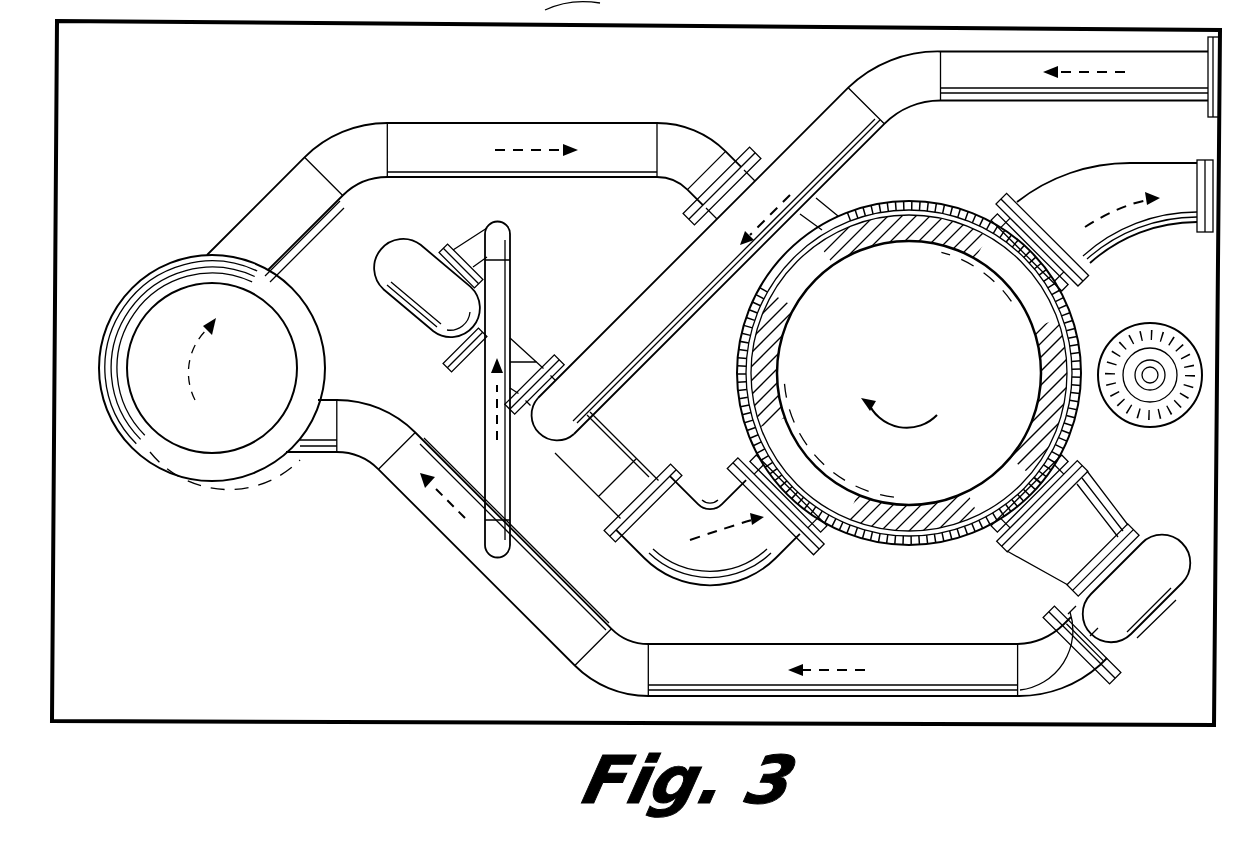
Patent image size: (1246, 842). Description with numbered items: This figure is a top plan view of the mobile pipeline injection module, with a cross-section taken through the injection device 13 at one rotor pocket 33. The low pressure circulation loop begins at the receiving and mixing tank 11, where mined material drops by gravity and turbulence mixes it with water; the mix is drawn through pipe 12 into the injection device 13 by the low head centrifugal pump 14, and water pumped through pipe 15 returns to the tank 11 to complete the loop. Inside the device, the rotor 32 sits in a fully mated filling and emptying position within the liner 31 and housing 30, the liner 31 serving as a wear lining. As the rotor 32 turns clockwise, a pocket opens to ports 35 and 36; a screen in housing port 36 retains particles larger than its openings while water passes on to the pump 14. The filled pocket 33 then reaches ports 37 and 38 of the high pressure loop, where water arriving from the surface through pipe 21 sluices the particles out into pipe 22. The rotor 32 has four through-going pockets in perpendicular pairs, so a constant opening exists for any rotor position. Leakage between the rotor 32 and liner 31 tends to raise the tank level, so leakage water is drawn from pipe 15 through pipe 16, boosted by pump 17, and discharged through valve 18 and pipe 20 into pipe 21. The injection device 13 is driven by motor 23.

The receiving and mixing tank 11 is at (208, 262).
The pipe 12 is at (498, 125).
The injection device 13 is at (900, 556).
The low head centrifugal pump 14 is at (1130, 615).
The pipe 15 is at (495, 568).
The pipe 16 is at (483, 383).
The pump 17 is at (395, 262).
The valve 18 is at (540, 347).
The pipe 20 is at (528, 432).
The pipe 21 is at (892, 55).
The pipe 22 is at (1200, 160).
The motor 23 is at (1145, 415).
The housing 30 is at (740, 345).
The liner 31 is at (738, 407).
The rotor 32 is at (912, 215).
The rotor pocket 33 is at (958, 214).
The port 35 is at (810, 220).
The housing port 36 is at (1025, 520).
The port 37 is at (808, 547).
The port 38 is at (1092, 270).